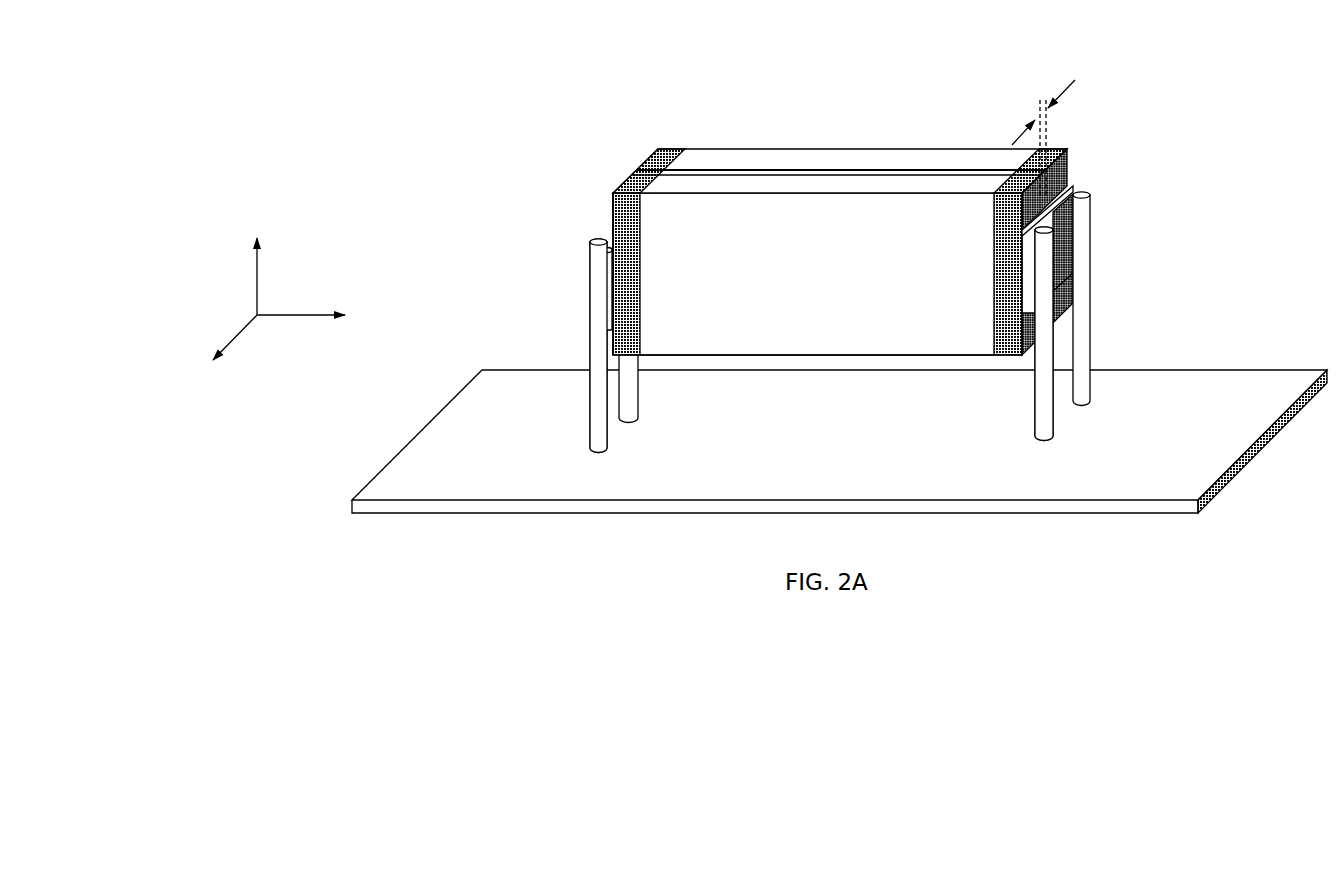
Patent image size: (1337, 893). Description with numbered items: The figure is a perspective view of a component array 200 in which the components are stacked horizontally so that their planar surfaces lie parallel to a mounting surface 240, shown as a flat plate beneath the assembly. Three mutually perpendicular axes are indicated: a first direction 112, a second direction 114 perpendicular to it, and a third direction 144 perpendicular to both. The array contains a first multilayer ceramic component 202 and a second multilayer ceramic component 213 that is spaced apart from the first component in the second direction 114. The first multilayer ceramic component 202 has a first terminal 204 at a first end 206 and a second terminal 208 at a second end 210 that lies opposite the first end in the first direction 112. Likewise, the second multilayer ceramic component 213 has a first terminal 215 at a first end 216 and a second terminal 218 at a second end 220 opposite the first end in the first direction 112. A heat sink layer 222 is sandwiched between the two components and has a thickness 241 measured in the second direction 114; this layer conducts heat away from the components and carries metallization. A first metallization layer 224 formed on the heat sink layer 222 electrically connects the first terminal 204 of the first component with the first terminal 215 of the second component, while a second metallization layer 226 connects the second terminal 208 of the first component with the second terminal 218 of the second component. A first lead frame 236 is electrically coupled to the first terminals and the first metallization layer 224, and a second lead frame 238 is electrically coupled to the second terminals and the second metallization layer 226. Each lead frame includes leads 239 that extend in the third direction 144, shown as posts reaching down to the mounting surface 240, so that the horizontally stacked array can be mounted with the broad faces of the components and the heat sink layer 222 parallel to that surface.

The first direction 112 is at (329, 319).
The second direction 114 is at (216, 357).
The third direction 144 is at (255, 263).
The component array 200 is at (468, 137).
The first multilayer ceramic component 202 is at (825, 148).
The first terminal 204 is at (675, 148).
The first end 206 is at (647, 153).
The second terminal 208 is at (1068, 165).
The second end 210 is at (1065, 148).
The second multilayer ceramic component 213 is at (742, 357).
The first terminal 215 is at (613, 220).
The first end 216 is at (612, 198).
The second terminal 218 is at (1010, 358).
The second end 220 is at (1062, 308).
The heat sink layer 222 is at (930, 172).
The first metallization layer 224 is at (635, 170).
The second metallization layer 226 is at (1068, 184).
The first lead frame 236 is at (590, 302).
The second lead frame 238 is at (1093, 230).
The leads 239 is at (588, 427).
The mounting surface 240 is at (845, 446).
The thickness 241 is at (1055, 92).